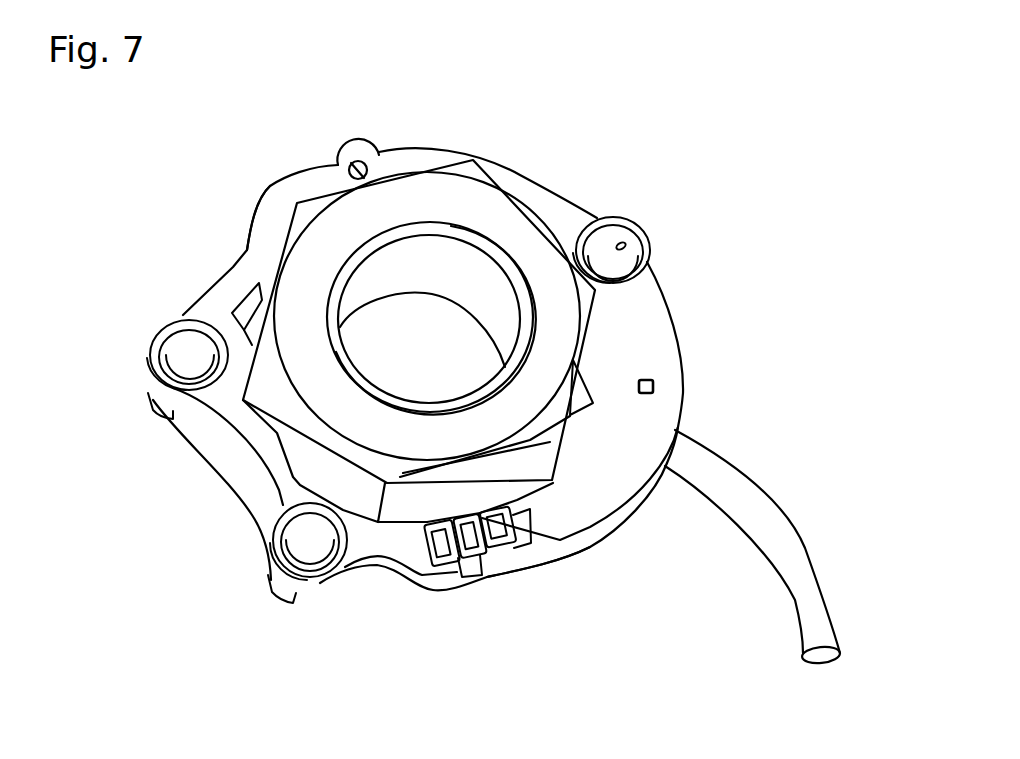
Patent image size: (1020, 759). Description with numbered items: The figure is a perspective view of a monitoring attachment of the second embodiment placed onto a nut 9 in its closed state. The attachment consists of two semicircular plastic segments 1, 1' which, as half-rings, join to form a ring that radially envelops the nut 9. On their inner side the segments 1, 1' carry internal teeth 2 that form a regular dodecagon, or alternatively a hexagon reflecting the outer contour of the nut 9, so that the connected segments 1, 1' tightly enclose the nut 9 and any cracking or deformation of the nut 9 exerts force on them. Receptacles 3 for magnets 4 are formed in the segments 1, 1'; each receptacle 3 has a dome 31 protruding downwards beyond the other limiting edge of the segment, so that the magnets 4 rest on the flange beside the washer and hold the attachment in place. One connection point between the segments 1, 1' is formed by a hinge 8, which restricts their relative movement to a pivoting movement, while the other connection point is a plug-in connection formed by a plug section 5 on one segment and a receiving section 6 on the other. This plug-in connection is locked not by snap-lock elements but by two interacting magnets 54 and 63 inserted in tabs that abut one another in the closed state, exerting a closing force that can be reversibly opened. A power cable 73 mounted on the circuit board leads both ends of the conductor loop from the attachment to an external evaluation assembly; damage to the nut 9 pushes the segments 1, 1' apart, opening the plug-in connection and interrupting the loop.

The segment 1 is at (487, 369).
The segment 1' is at (222, 205).
The internal teeth 2 is at (575, 414).
The receptacle 3 is at (611, 232).
The magnet 4 is at (615, 262).
The plug section 5 is at (437, 600).
The receiving section 6 is at (532, 603).
The hinge 8 is at (338, 128).
The nut 9 is at (475, 205).
The dome 31 is at (172, 393).
The magnet 54 is at (497, 540).
The magnet 63 is at (447, 540).
The power cable 73 is at (806, 548).